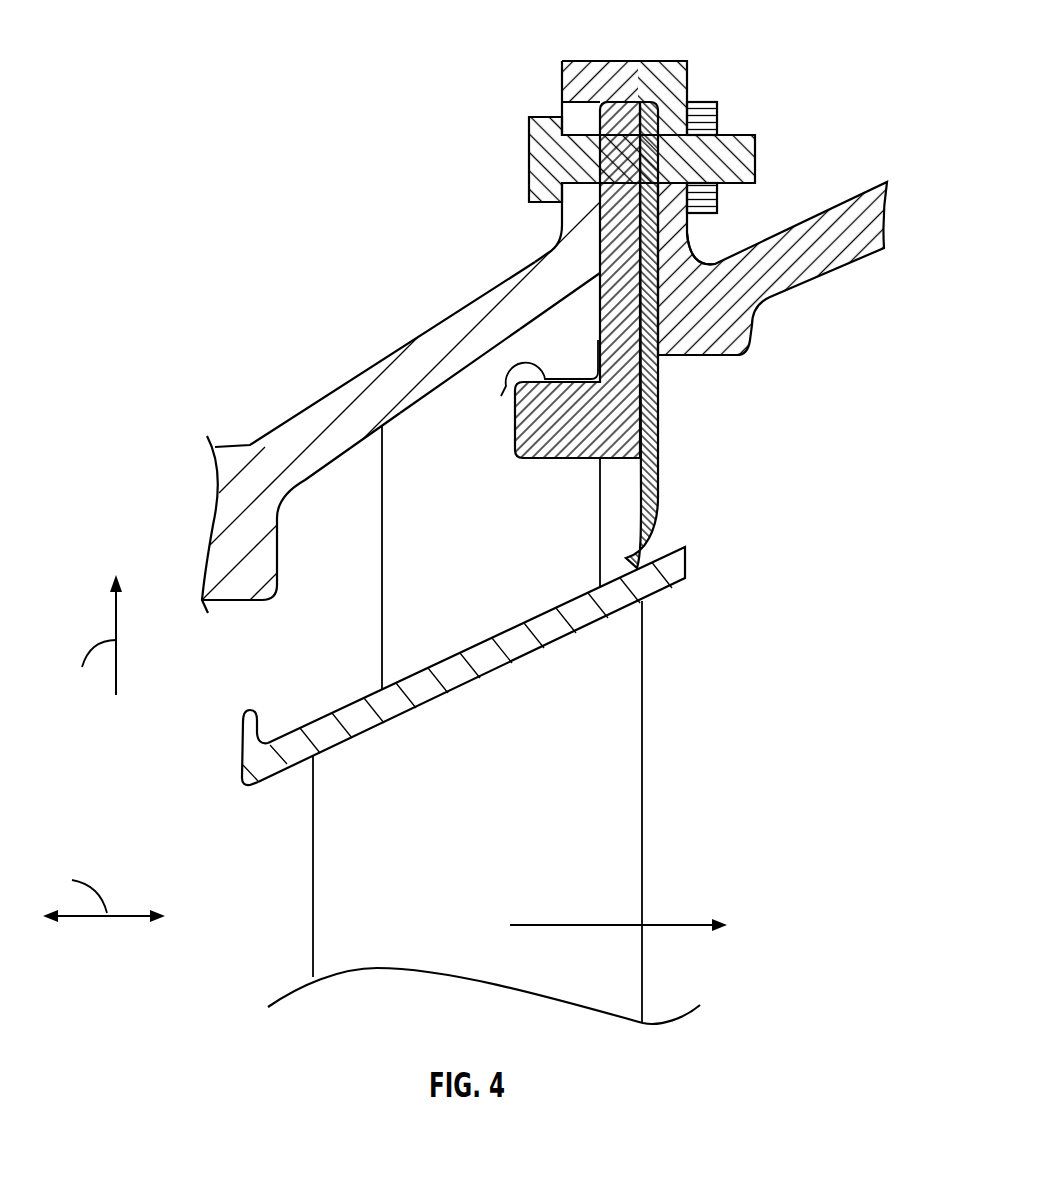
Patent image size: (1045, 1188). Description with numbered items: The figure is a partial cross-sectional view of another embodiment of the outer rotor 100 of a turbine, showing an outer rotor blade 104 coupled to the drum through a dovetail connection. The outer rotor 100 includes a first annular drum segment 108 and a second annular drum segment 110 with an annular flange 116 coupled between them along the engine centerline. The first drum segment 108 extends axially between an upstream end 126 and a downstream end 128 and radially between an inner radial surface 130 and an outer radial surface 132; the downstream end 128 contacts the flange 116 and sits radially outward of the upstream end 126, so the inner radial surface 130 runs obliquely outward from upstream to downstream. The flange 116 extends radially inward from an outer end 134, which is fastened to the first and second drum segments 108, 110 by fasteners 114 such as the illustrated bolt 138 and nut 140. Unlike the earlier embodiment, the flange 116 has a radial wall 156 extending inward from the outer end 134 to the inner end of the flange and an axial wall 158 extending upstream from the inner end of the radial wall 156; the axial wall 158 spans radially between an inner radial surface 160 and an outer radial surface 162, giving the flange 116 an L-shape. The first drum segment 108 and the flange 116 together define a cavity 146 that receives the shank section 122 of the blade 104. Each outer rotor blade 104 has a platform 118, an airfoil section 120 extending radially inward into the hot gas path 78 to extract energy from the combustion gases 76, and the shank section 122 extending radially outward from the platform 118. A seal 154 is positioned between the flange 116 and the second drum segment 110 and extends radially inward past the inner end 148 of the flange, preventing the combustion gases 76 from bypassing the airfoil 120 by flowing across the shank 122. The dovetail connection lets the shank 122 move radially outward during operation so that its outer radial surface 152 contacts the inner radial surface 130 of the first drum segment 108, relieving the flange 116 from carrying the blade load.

The outer rotor 100 is at (195, 183).
The outer rotor blade 104 is at (225, 868).
The first annular drum segment 108 is at (322, 395).
The second annular drum segment 110 is at (827, 272).
The fastener 114 is at (742, 112).
The annular flange 116 is at (622, 383).
The platform 118 is at (667, 590).
The airfoil section 120 is at (642, 840).
The shank section 122 is at (407, 606).
The upstream end 126 is at (247, 402).
The downstream end 128 is at (543, 223).
The inner radial surface 130 is at (327, 465).
The outer radial surface 132 is at (402, 347).
The outer end 134 is at (620, 120).
The bolt 138 is at (747, 162).
The nut 140 is at (703, 102).
The cavity 146 is at (577, 323).
The inner end of the flange 148 is at (617, 478).
The outer radial surface of the shank portion 152 is at (493, 347).
The seal 154 is at (660, 522).
The radial wall 156 is at (620, 233).
The axial wall 158 is at (547, 448).
The inner radial surface of the axial wall 160 is at (590, 460).
The outer radial surface of the axial wall 162 is at (501, 396).
The combustion gases 76 is at (593, 923).
The hot gas path 78 is at (453, 843).